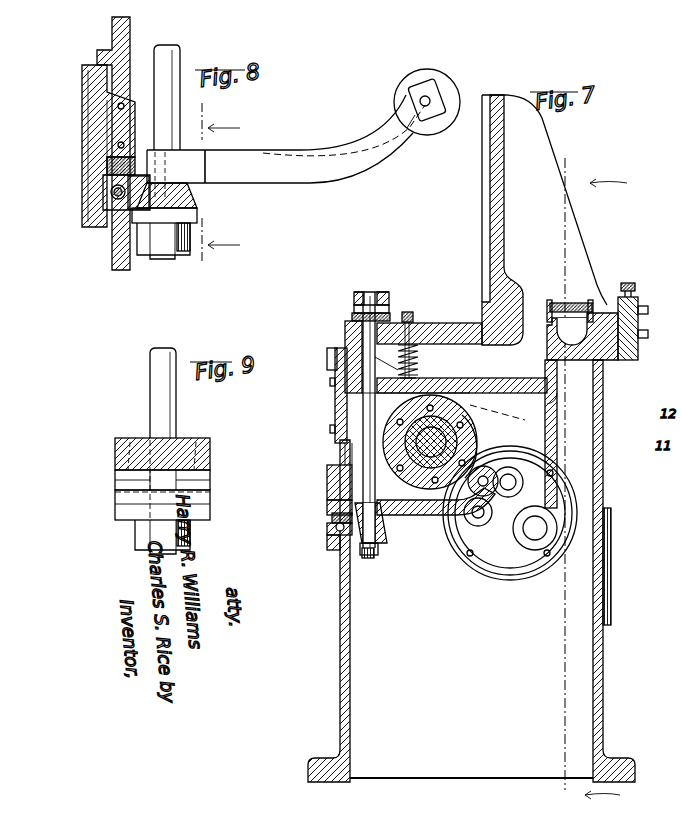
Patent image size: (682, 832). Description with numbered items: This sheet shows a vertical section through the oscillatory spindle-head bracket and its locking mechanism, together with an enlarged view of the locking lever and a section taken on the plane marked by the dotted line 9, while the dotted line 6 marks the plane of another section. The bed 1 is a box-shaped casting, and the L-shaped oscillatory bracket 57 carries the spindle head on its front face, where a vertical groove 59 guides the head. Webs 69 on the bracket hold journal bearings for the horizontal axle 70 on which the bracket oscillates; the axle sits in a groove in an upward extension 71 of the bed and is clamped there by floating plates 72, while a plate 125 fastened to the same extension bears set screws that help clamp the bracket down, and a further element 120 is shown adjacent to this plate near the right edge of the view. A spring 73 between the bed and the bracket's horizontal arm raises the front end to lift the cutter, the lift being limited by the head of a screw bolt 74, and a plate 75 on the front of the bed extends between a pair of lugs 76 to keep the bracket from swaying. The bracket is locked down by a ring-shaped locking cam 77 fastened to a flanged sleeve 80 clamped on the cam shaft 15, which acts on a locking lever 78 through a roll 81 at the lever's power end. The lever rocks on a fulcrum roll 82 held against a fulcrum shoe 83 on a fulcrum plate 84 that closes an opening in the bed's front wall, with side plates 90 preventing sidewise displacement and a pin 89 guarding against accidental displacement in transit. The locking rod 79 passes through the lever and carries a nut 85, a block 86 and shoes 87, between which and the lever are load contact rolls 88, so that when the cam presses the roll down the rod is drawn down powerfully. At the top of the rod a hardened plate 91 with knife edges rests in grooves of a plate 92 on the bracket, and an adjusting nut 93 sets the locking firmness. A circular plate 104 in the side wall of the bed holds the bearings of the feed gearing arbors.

In FIG. 8, the bed 1 is at (112, 258).
In FIG. 7, the bed 1 is at (471, 571).
In FIG. 7, the section line 6— 6 is at (596, 480).
In FIG. 8, the section line 9— 9 is at (221, 182).
In FIG. 7, the cam shaft 15 is at (497, 412).
In FIG. 7, the oscillatory bracket 57 is at (490, 172).
In FIG. 7, the vertical groove 59 is at (482, 196).
In FIG. 7, the web 69 is at (556, 200).
In FIG. 7, the horizontal axle 70 is at (492, 378).
In FIG. 7, the upward extension 71 is at (538, 340).
In FIG. 7, the floating plates 72 is at (556, 300).
In FIG. 7, the spring 73 is at (420, 358).
In FIG. 7, the screw bolt 74 is at (413, 316).
In FIG. 7, the plate 75 is at (335, 401).
In FIG. 7, the lugs 76 is at (347, 360).
In FIG. 7, the locking cam 77 is at (545, 436).
In FIG. 8, the locking lever 78 is at (286, 139).
In FIG. 9, the locking lever 78 is at (115, 455).
In FIG. 7, the locking lever 78 is at (448, 520).
In FIG. 8, the locking rod 79 is at (180, 50).
In FIG. 9, the locking rod 79 is at (150, 390).
In FIG. 7, the locking rod 79 is at (363, 454).
In FIG. 7, the flanged sleeve 80 is at (477, 430).
In FIG. 8, the roll 81 is at (403, 84).
In FIG. 7, the roll 81 is at (492, 512).
In FIG. 8, the fulcrum roll 82 is at (107, 164).
In FIG. 7, the fulcrum roll 82 is at (332, 517).
In FIG. 8, the fulcrum shoe 83 is at (85, 147).
In FIG. 7, the fulcrum shoe 83 is at (327, 500).
In FIG. 8, the fulcrum plate 84 is at (82, 88).
In FIG. 7, the fulcrum plate 84 is at (327, 545).
In FIG. 8, the nut 85 is at (150, 252).
In FIG. 9, the nut 85 is at (135, 538).
In FIG. 7, the nut 85 is at (370, 558).
In FIG. 8, the block 86 is at (197, 213).
In FIG. 9, the block 86 is at (115, 514).
In FIG. 7, the block 86 is at (378, 550).
In FIG. 8, the shoes 87 is at (195, 193).
In FIG. 9, the shoes 87 is at (115, 482).
In FIG. 7, the shoes 87 is at (378, 522).
In FIG. 8, the load contact rolls 88 is at (180, 162).
In FIG. 9, the load contact rolls 88 is at (128, 440).
In FIG. 8, the pin 89 is at (110, 195).
In FIG. 7, the pin 89 is at (336, 529).
In FIG. 8, the side plates 90 is at (90, 112).
In FIG. 7, the side plates 90 is at (327, 476).
In FIG. 7, the hardened plate 91 is at (354, 300).
In FIG. 7, the plate 92 is at (352, 316).
In FIG. 7, the adjusting nut 93 is at (389, 295).
In FIG. 7, the circular plate 104 is at (522, 570).
In FIG. 7, the adjusting screw 120 is at (635, 288).
In FIG. 7, the plate 125 is at (638, 353).